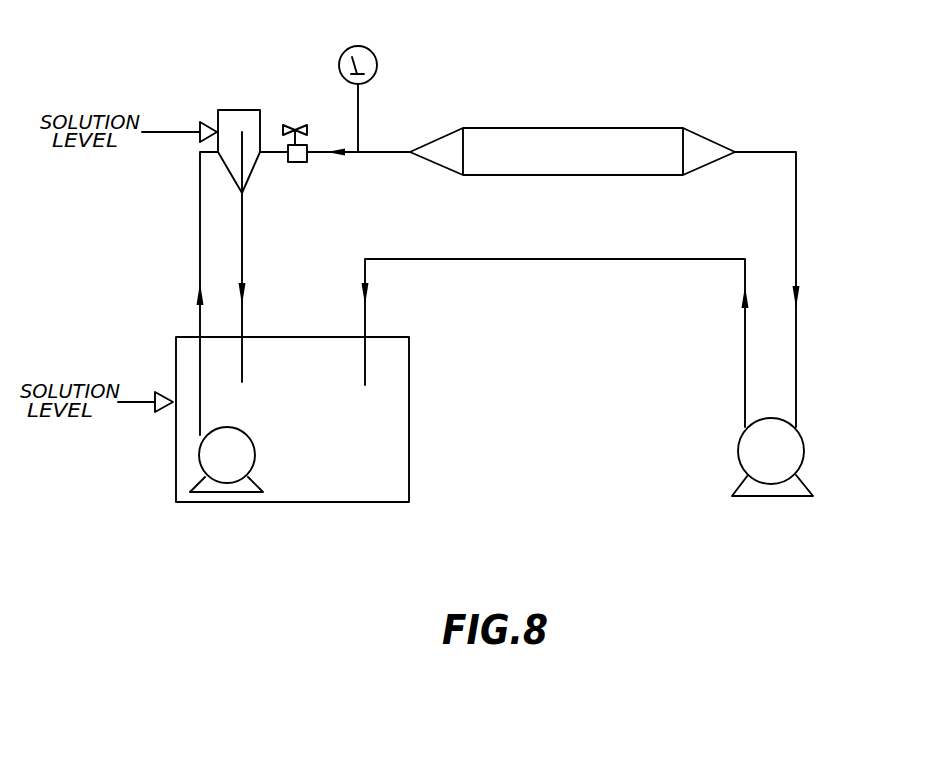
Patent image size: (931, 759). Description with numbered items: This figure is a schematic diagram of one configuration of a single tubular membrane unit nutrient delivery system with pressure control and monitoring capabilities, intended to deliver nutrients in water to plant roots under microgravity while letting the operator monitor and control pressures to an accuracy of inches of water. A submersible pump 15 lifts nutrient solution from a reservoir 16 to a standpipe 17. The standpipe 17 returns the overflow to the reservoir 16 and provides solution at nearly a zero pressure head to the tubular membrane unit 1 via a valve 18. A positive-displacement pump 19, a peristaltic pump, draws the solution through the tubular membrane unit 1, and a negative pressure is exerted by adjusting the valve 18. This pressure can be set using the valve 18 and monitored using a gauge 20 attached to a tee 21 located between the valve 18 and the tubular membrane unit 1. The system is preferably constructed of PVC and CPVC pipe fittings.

The tubular membrane unit 1 is at (634, 140).
The submersible pump 15 is at (242, 440).
The reservoir 16 is at (410, 358).
The standpipe 17 is at (257, 112).
The valve 18 is at (307, 145).
The positive-displacement pump 19 is at (747, 448).
The gauge 20 is at (373, 51).
The tee 21 is at (361, 142).